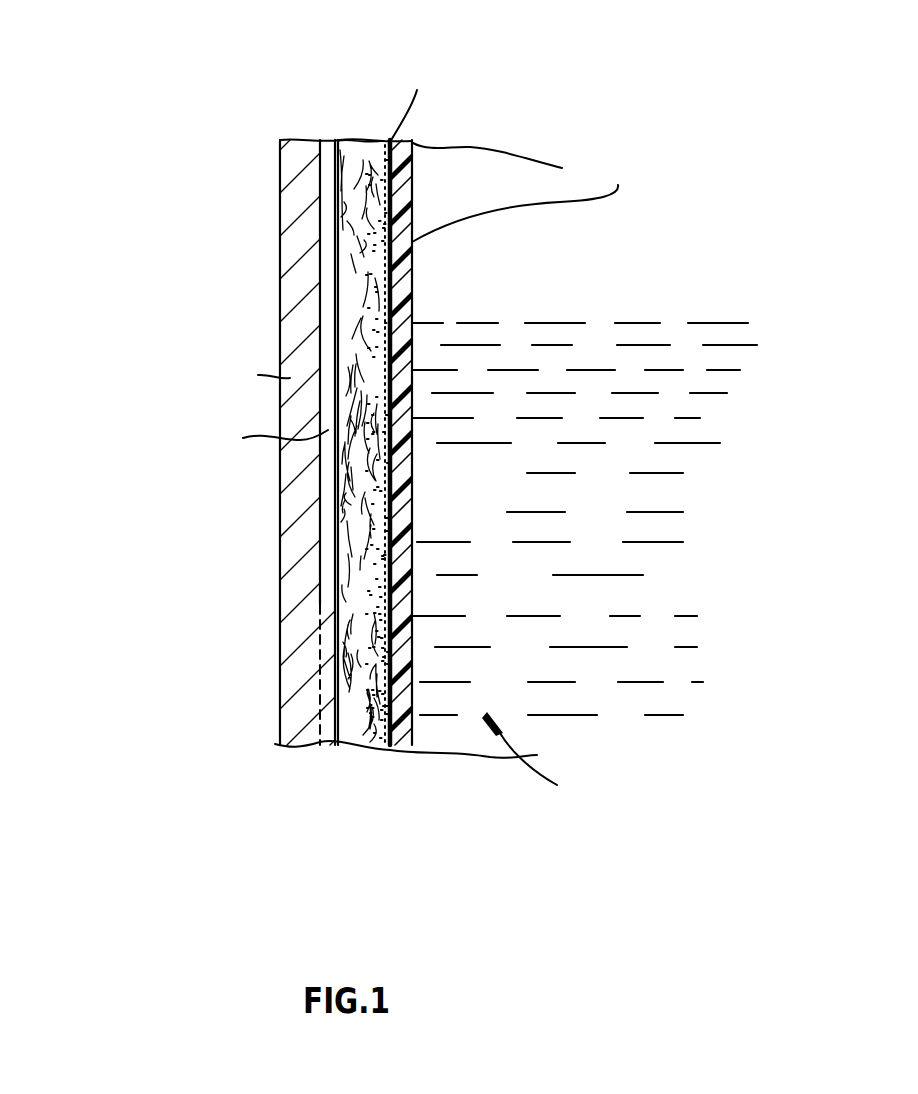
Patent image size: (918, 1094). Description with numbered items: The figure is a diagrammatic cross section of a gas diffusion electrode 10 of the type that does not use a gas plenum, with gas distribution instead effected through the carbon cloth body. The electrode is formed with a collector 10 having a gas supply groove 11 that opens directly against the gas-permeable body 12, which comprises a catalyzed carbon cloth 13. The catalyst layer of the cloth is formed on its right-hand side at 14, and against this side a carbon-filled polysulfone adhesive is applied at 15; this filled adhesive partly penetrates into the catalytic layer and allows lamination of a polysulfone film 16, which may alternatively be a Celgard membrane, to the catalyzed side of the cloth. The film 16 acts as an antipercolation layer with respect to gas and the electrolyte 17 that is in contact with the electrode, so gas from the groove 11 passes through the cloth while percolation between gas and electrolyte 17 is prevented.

The collector 10 is at (297, 220).
The gas supply groove 11 is at (327, 266).
The gas-permeable body 12 is at (345, 748).
The catalyzed carbon cloth 13 is at (372, 748).
The catalyst layer 14 is at (362, 142).
The carbon-filled polysulfone adhesive 15 is at (345, 163).
The polysulfone film 16 is at (413, 490).
The electrolyte 17 is at (548, 325).